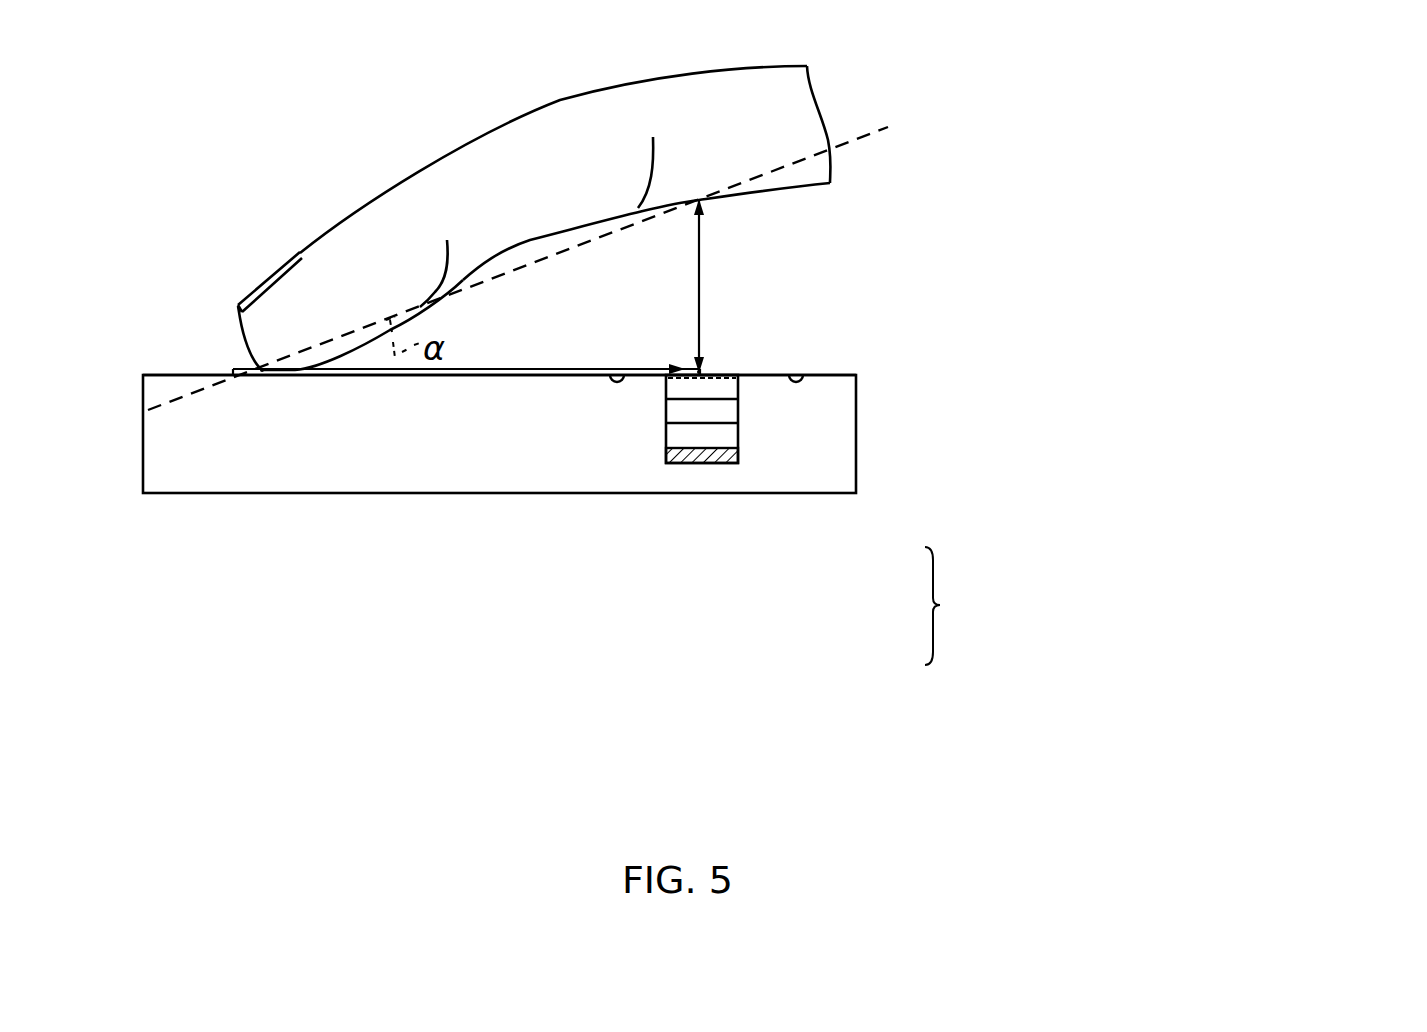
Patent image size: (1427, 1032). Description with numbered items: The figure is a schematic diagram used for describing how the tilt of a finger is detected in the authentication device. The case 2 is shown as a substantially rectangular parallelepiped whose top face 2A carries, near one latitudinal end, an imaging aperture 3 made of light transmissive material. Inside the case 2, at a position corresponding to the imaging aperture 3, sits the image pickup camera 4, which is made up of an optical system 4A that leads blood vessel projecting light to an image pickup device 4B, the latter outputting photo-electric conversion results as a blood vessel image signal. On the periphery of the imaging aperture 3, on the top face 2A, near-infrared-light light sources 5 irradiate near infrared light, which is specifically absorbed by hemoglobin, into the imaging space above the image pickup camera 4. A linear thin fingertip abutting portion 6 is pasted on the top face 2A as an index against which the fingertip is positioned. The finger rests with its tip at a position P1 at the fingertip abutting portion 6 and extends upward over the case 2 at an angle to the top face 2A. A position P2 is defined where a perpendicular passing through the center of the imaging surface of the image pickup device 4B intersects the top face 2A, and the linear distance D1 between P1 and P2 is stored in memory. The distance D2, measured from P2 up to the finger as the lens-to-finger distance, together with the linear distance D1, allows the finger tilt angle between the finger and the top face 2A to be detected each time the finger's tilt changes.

The case 2 is at (153, 390).
The top face 2A is at (127, 366).
The imaging aperture 3 is at (740, 377).
The image pickup camera 4 is at (974, 520).
The optical system 4A is at (666, 412).
The image pickup device 4B is at (677, 463).
The near-infrared-light light source 5 is at (797, 373).
The fingertip abutting portion 6 is at (230, 372).
The position at the fingertip abutting portion P1 is at (262, 368).
The position where the perpendicular intersects the top face P2 is at (703, 370).
The linear distance D1 is at (540, 370).
The distance D2 is at (702, 288).